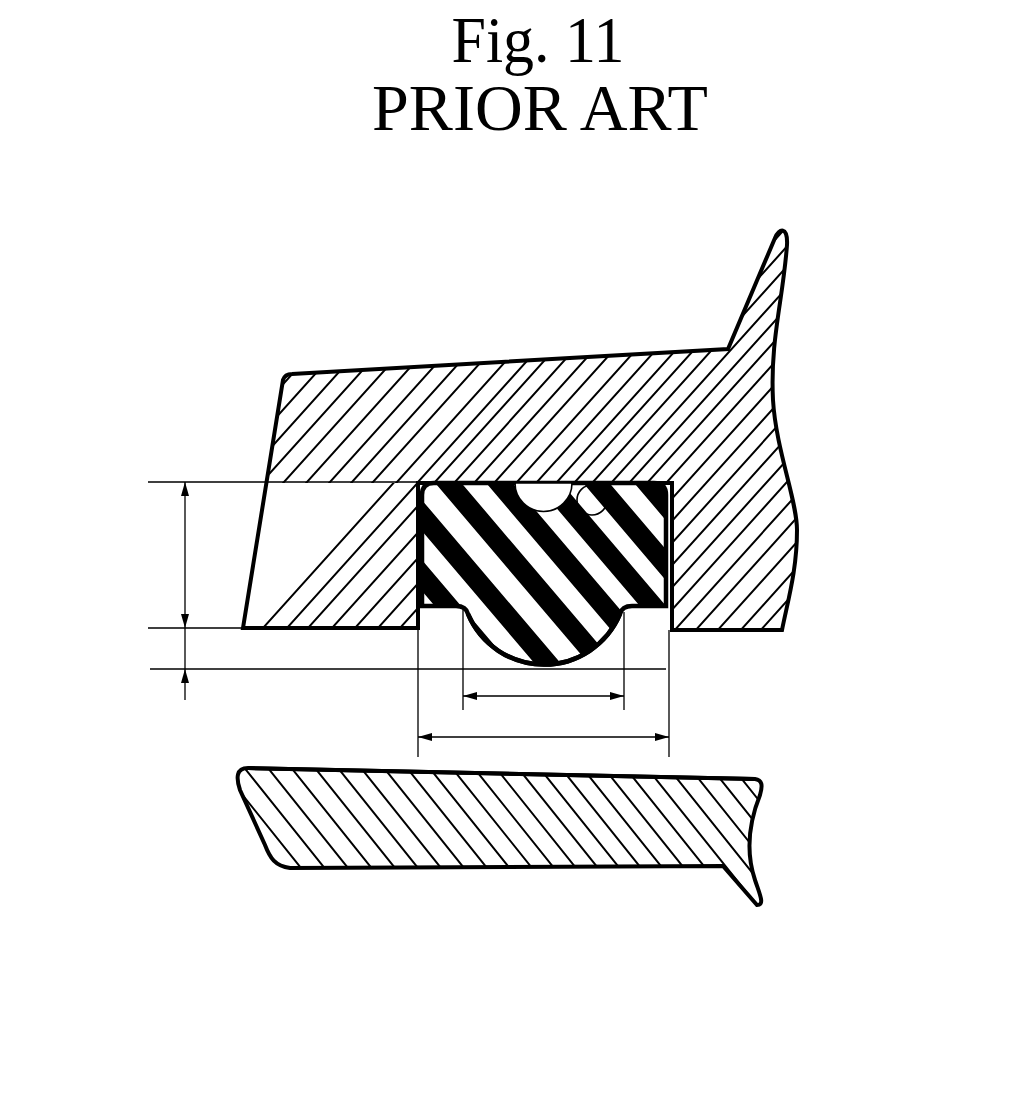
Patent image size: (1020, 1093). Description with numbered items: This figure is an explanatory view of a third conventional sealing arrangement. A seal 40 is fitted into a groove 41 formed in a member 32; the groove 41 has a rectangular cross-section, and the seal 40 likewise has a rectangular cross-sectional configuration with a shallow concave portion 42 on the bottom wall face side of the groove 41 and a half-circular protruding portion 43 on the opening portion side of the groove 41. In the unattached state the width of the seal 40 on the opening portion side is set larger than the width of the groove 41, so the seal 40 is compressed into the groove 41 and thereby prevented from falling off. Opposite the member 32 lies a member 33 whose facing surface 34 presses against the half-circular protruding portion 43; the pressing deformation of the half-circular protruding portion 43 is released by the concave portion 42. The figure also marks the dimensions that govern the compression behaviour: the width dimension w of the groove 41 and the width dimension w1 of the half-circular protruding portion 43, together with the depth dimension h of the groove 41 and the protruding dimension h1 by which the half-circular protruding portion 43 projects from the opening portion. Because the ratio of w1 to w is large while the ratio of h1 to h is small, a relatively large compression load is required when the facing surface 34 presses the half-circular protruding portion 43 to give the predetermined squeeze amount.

The member 32 is at (338, 366).
The member 33 is at (452, 796).
The facing surface 34 is at (357, 768).
The seal 40 is at (620, 493).
The groove 41 is at (617, 483).
The concave portion 42 is at (540, 512).
The half-circular protruding portion 43 is at (603, 652).
The depth dimension of the groove h is at (185, 543).
The protruding dimension h1 is at (185, 645).
The width dimension of the groove w is at (588, 737).
The width dimension of the half-circular protruding portion w1 is at (535, 697).